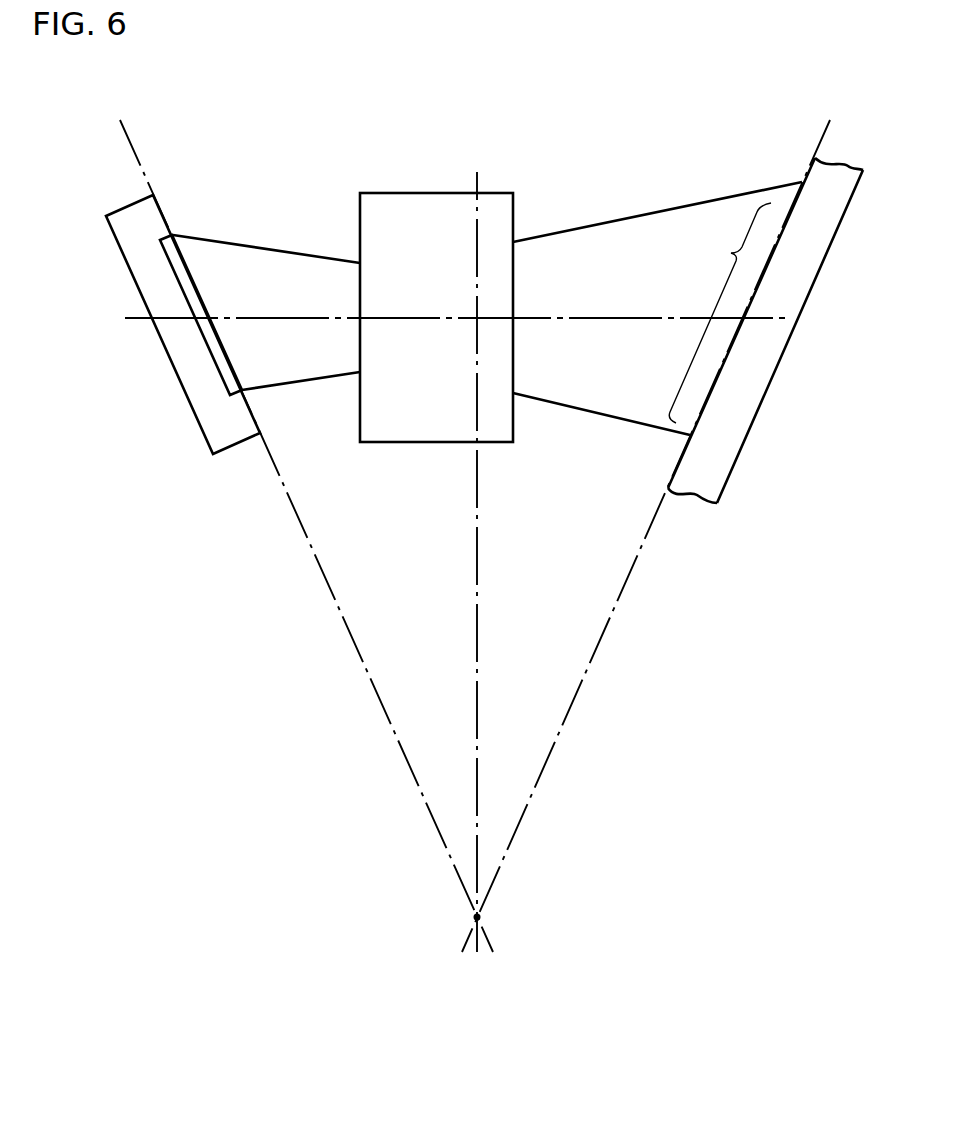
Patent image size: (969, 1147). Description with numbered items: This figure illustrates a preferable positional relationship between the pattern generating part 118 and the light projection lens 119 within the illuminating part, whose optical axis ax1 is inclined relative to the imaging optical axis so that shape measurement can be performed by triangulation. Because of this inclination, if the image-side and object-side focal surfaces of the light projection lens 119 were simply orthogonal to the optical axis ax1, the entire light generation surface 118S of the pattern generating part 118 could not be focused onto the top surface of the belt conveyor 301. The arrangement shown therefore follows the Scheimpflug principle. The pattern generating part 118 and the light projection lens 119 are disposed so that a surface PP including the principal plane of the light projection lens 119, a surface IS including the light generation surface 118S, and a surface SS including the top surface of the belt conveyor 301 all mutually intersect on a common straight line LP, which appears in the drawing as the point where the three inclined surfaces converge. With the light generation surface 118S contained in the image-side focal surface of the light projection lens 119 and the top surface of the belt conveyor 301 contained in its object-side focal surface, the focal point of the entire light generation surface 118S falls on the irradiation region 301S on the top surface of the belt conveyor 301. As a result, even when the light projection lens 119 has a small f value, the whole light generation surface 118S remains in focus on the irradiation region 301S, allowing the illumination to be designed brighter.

The pattern generating part 118 is at (183, 393).
The light generation surface 118S is at (191, 275).
The light projection lens 119 is at (413, 192).
The belt conveyor 301 is at (764, 392).
The irradiation region 301S is at (719, 313).
The optical axis of the illuminating part ax1 is at (657, 317).
The surface including a principal plane of the light projection lens PP is at (475, 468).
The surface including the light generation surface IS is at (313, 552).
The surface including the top surface of the belt conveyor SS is at (640, 552).
The common straight line LP is at (475, 917).